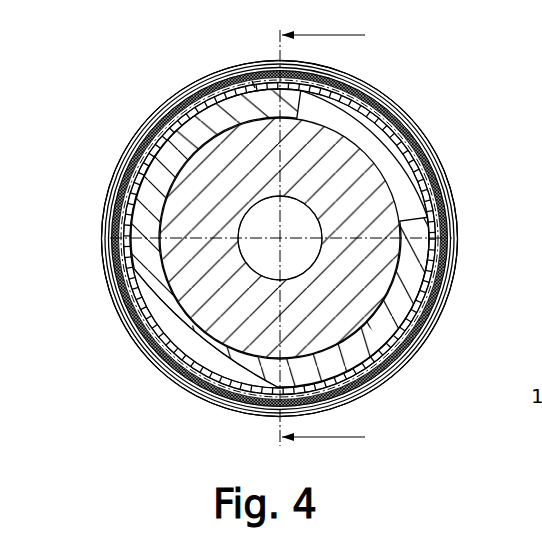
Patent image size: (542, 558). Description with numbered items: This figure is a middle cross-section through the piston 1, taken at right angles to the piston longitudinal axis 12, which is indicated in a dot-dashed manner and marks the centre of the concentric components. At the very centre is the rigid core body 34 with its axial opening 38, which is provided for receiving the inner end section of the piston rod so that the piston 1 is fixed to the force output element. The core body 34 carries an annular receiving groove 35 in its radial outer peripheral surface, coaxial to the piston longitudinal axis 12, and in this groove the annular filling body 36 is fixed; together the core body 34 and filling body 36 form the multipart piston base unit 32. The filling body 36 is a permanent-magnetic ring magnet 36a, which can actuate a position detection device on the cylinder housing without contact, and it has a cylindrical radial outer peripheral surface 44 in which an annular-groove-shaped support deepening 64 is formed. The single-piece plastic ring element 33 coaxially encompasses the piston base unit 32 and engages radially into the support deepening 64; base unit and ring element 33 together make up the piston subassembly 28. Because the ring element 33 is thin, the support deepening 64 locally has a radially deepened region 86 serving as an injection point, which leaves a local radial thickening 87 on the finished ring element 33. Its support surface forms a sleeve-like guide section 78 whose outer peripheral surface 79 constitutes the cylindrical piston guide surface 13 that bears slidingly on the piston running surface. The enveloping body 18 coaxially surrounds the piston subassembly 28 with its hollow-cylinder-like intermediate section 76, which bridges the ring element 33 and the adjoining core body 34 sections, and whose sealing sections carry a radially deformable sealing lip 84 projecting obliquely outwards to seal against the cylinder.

The piston 1 is at (280, 218).
The piston longitudinal axis 12 is at (278, 242).
The piston guide surface 13 is at (280, 239).
The enveloping body 18 is at (383, 84).
The piston subassembly 28 is at (381, 366).
The piston base unit 32 is at (416, 184).
The ring element 33 is at (433, 305).
The core body 34 is at (252, 145).
The receiving groove 35 is at (400, 218).
The filling body 36 is at (150, 170).
The ring magnet 36a is at (279, 238).
The axial opening 38 is at (302, 264).
The radial outer peripheral surface 44 is at (138, 334).
The support deepening 64 is at (404, 117).
The enveloping body intermediate section 76 is at (447, 264).
The guide section 78 is at (420, 146).
The outer peripheral surface 79 is at (186, 80).
The sealing lip 84 is at (148, 122).
The radially deepened region 86 is at (225, 96).
The local radial thickening 87 is at (254, 82).